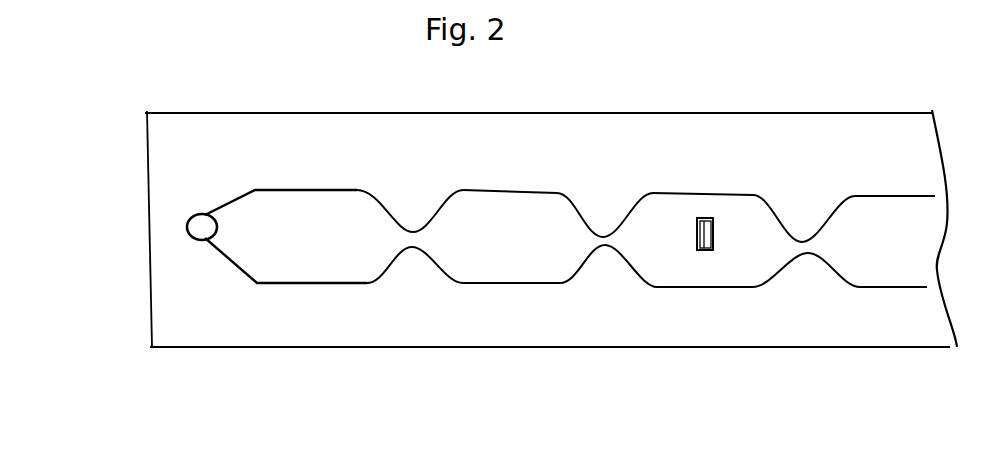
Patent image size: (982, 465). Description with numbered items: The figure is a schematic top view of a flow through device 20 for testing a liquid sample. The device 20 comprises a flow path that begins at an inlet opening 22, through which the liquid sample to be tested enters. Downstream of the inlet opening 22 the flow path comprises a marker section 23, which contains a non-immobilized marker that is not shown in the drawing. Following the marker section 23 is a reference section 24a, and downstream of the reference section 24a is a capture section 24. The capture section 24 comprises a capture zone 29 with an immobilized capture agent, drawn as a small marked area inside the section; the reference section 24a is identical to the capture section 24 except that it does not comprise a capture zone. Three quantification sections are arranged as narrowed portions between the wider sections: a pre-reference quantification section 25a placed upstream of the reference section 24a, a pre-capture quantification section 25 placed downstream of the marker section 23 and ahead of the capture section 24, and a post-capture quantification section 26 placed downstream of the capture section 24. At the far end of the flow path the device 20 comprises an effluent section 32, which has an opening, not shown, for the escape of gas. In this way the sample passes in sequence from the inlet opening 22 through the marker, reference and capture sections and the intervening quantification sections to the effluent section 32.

The flow through device 20 is at (709, 96).
The inlet opening 22 is at (198, 226).
The marker section 23 is at (268, 212).
The capture section 24 is at (667, 203).
The reference section 24a is at (460, 205).
The pre-capture quantification section 25 is at (603, 250).
The pre-reference quantification section 25a is at (412, 250).
The post-capture quantification section 26 is at (810, 249).
The capture zone 29 is at (704, 252).
The effluent section 32 is at (900, 258).